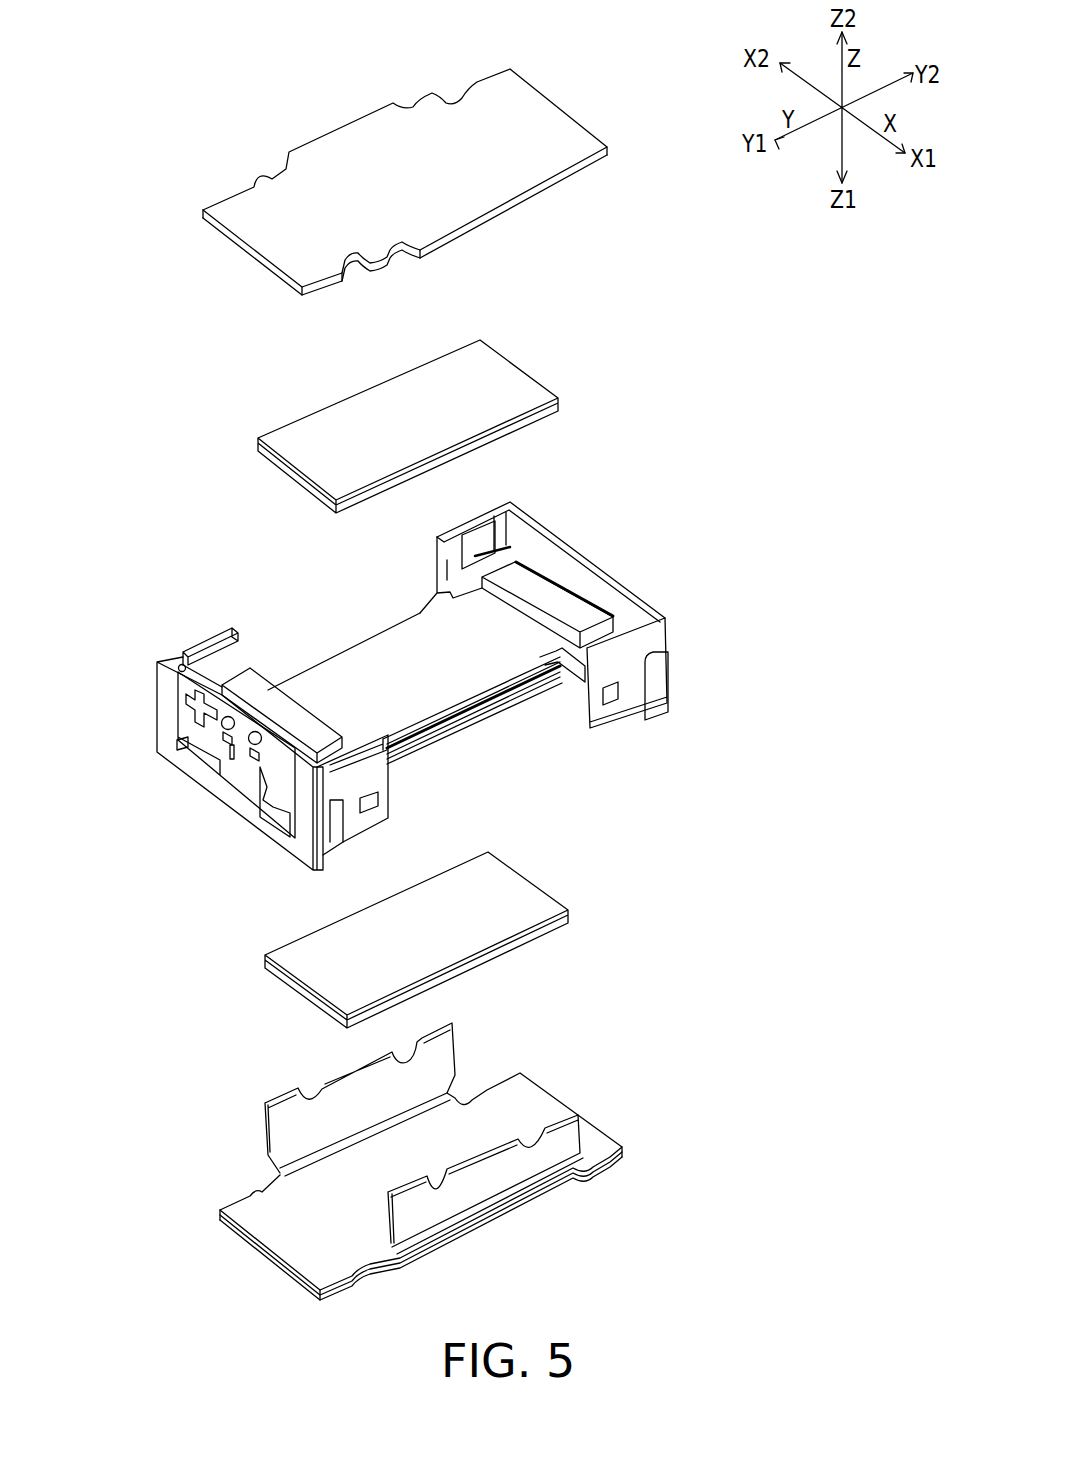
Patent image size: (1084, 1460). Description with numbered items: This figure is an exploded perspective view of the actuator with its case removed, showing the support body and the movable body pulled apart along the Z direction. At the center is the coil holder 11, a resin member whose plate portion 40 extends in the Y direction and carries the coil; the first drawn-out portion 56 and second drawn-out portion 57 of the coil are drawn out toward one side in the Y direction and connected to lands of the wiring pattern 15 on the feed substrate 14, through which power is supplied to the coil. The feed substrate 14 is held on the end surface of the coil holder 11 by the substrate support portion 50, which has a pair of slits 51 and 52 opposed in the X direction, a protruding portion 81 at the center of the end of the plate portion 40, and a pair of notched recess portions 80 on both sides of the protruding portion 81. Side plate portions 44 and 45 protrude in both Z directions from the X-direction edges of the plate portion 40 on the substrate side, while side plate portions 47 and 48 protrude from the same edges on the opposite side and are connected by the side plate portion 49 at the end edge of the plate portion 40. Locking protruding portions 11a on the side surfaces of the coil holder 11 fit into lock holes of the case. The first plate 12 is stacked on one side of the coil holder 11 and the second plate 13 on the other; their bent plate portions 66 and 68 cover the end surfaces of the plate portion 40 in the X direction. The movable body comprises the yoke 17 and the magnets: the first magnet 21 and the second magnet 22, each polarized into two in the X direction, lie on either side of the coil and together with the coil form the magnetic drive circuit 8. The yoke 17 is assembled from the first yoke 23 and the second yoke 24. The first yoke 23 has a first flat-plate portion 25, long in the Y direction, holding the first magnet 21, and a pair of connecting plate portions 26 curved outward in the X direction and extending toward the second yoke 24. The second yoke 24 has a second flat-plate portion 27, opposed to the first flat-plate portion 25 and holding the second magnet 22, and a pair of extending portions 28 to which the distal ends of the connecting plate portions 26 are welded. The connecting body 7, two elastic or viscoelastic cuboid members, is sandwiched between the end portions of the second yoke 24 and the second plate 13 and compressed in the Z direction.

The connecting body 7 is at (543, 588).
The magnetic drive circuit 8 is at (468, 679).
The coil holder 11 is at (392, 675).
The locking protruding portions 11a is at (613, 698).
The first plate 12 is at (427, 750).
The second plate 13 is at (367, 663).
The feed substrate 14 is at (192, 738).
The wiring pattern 15 is at (197, 722).
The yoke 17 is at (496, 667).
The first magnet 21 is at (498, 925).
The second magnet 22 is at (493, 393).
The first yoke 23 is at (496, 1161).
The second yoke 24 is at (435, 165).
The first flat-plate portion 25 is at (280, 1223).
The connecting plate portions 26 is at (312, 1128).
The second flat-plate portion 27 is at (265, 222).
The extending portions 28 is at (338, 128).
The plate portion 40 is at (550, 677).
The side plate portion 44 is at (353, 820).
The side plate portion 45 is at (217, 627).
The side plate portion 47 is at (628, 680).
The side plate portion 48 is at (478, 520).
The side plate portion 49 is at (627, 588).
The substrate support portion 50 is at (249, 729).
The slit 51 is at (323, 872).
The slit 52 is at (179, 664).
The first drawn-out portion 56 is at (255, 767).
The second drawn-out portion 57 is at (222, 740).
The bent plate portions 66 is at (463, 720).
The bent plate portions 68 is at (497, 695).
The notched recess portions 80 is at (188, 753).
The protruding portion 81 is at (227, 745).